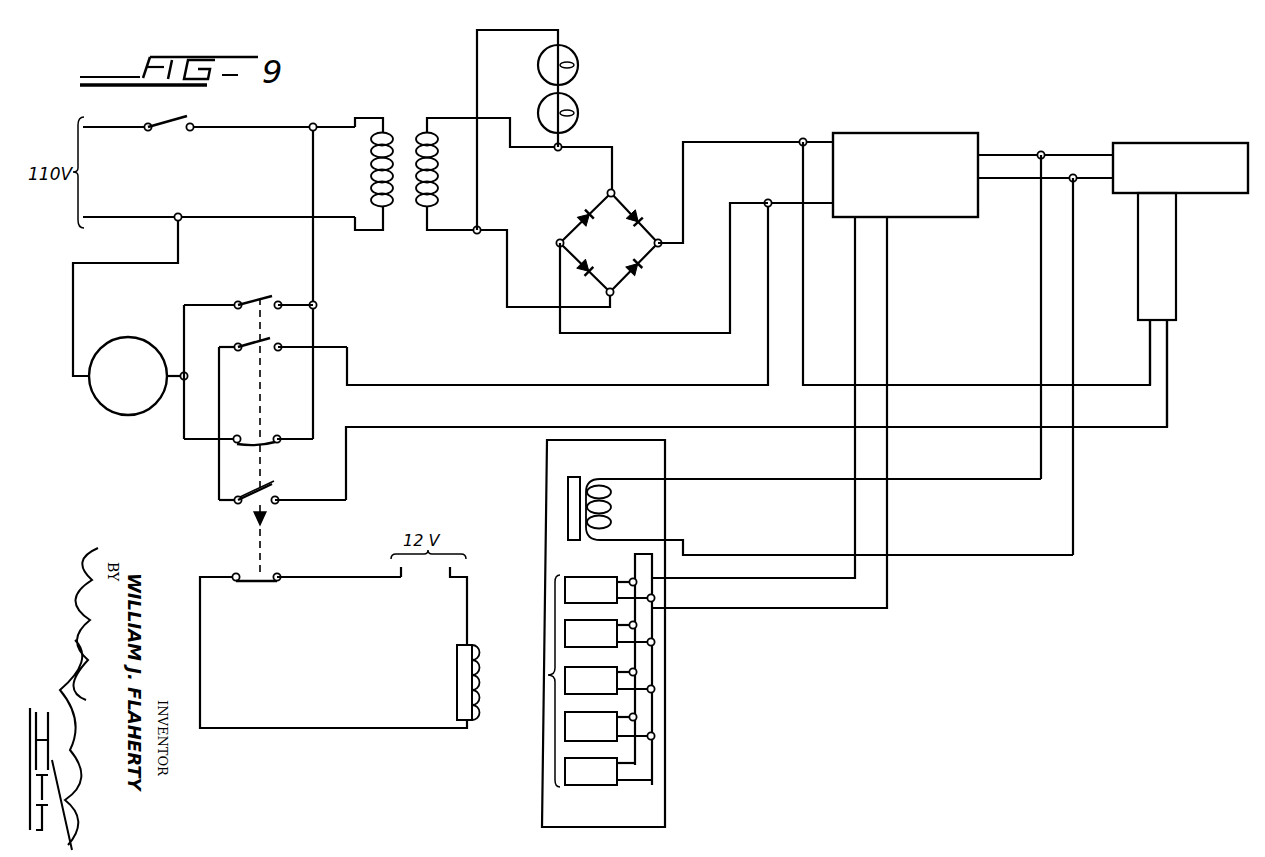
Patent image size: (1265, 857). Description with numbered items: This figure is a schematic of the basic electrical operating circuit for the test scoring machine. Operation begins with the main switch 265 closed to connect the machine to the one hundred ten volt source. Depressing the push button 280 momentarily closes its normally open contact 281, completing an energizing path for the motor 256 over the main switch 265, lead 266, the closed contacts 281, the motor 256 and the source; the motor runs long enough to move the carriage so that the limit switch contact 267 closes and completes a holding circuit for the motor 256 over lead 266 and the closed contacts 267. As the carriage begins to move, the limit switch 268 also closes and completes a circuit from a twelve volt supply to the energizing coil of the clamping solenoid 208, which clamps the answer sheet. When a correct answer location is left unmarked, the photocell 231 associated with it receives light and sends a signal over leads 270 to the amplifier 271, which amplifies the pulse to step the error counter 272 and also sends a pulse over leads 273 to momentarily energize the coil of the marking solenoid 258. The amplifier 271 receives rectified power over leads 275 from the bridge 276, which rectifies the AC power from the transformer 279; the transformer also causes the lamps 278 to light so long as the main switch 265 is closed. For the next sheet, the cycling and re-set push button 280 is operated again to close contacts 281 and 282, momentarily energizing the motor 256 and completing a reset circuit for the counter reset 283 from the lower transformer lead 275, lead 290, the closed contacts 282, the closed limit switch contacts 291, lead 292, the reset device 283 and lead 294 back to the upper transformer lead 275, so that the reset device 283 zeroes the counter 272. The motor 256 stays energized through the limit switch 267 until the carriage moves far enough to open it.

The main switch 265 is at (177, 121).
The lead 266 is at (313, 255).
The limit switch contact 267 is at (240, 437).
The limit switch 268 is at (257, 574).
The leads 270 is at (786, 608).
The amplifier 271 is at (886, 136).
The error counter 272 is at (1175, 144).
The leads 273 is at (1073, 320).
The leads 275 is at (700, 152).
The bridge 276 is at (641, 262).
The lamps 278 is at (568, 106).
The transformer 279 is at (385, 218).
The push button 280 is at (252, 312).
The normally open contact 281 is at (240, 300).
The contacts 282 is at (256, 349).
The counter reset 283 is at (1172, 240).
The lead 290 is at (588, 386).
The limit switch contacts 291 is at (268, 489).
The lead 292 is at (588, 427).
The lead 294 is at (1093, 387).
The motor 256 is at (122, 406).
The marking solenoid 258 is at (602, 503).
The photocells 231 is at (581, 670).
The clamping solenoid 208 is at (470, 702).